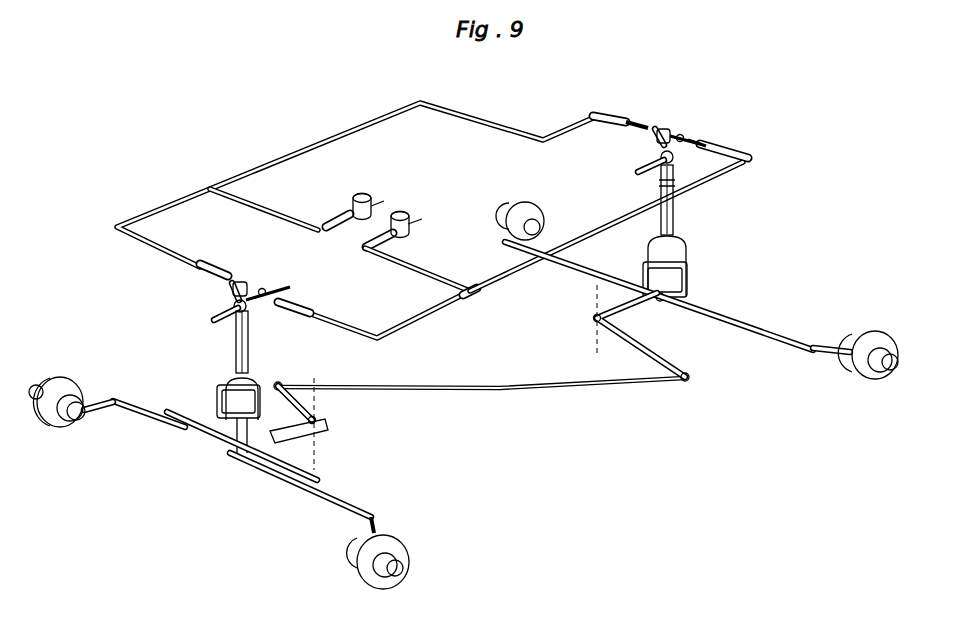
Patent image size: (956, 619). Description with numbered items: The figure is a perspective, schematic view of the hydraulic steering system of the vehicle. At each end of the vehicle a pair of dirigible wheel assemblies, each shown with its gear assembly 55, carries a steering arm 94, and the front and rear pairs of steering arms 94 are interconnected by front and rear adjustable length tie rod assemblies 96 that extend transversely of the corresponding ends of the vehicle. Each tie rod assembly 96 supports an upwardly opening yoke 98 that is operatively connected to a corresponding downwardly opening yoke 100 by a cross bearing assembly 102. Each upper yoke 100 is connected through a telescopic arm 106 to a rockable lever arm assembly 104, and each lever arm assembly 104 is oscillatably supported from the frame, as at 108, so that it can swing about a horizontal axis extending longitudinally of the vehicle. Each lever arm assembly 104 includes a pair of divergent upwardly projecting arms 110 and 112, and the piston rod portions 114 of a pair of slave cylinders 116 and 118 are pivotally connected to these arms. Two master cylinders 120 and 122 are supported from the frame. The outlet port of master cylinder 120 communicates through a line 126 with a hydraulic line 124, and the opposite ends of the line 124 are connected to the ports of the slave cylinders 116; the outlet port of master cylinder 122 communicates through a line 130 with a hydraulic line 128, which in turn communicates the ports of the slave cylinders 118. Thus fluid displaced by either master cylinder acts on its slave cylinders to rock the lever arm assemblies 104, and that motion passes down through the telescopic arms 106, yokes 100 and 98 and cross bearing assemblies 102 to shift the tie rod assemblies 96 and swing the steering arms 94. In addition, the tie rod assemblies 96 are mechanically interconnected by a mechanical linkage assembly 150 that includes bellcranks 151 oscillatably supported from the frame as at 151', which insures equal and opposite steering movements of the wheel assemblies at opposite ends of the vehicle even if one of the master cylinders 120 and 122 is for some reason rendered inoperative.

The gear assembly 55 is at (63, 417).
The steering arm 94 is at (103, 398).
The adjustable length tie rod assembly 96 is at (265, 455).
The yoke 98 is at (213, 397).
The downwardly opening yoke 100 is at (265, 376).
The cross bearing assembly 102 is at (284, 385).
The rockable lever arm assembly 104 is at (272, 285).
The telescopic arm 106 is at (235, 341).
The oscillatable support 108 is at (225, 310).
The upwardly projecting arm 110 is at (247, 280).
The upwardly projecting arm 112 is at (265, 289).
The piston rod portion 114 is at (230, 280).
The slave cylinder 116 is at (310, 306).
The slave cylinder 118 is at (220, 266).
The master cylinder 120 is at (402, 242).
The master cylinder 122 is at (337, 207).
The hydraulic line 124 is at (515, 273).
The line 126 is at (415, 268).
The hydraulic line 128 is at (357, 130).
The line 130 is at (290, 215).
The mechanical linkage assembly 150 is at (551, 390).
The bellcrank 151 is at (479, 408).
The bellcrank support 151' is at (435, 377).